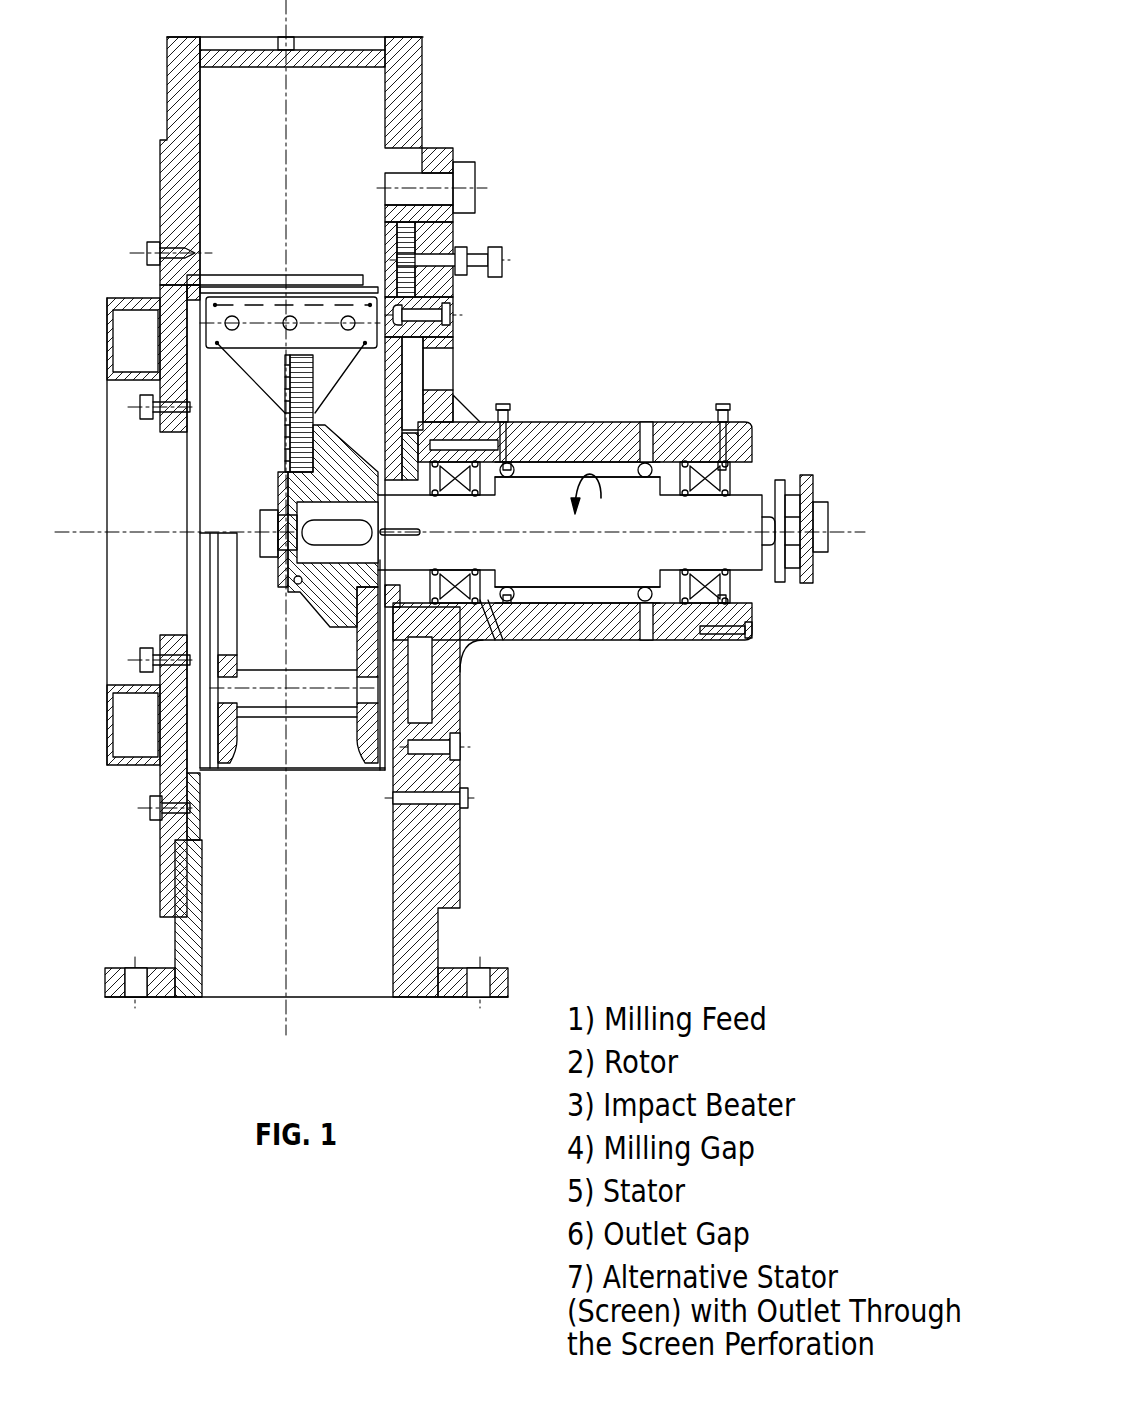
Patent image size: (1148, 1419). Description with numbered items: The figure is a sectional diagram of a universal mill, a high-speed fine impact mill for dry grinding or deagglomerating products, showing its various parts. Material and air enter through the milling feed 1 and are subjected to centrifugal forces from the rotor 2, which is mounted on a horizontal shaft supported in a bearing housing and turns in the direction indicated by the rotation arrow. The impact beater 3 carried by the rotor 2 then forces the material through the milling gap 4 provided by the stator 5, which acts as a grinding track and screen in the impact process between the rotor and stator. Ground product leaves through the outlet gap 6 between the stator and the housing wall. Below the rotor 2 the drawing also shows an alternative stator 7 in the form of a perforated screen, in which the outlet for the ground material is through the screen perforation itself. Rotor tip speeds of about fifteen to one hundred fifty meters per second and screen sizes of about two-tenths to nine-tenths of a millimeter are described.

The milling feed 1 is at (177, 573).
The rotor 2 is at (296, 437).
The impact beater 3 is at (225, 319).
The milling gap 4 is at (273, 762).
The stator 5 is at (277, 285).
The outlet gap 6 is at (375, 280).
The alternative stator (screen) with outlet through the screen perforation 7 is at (313, 772).